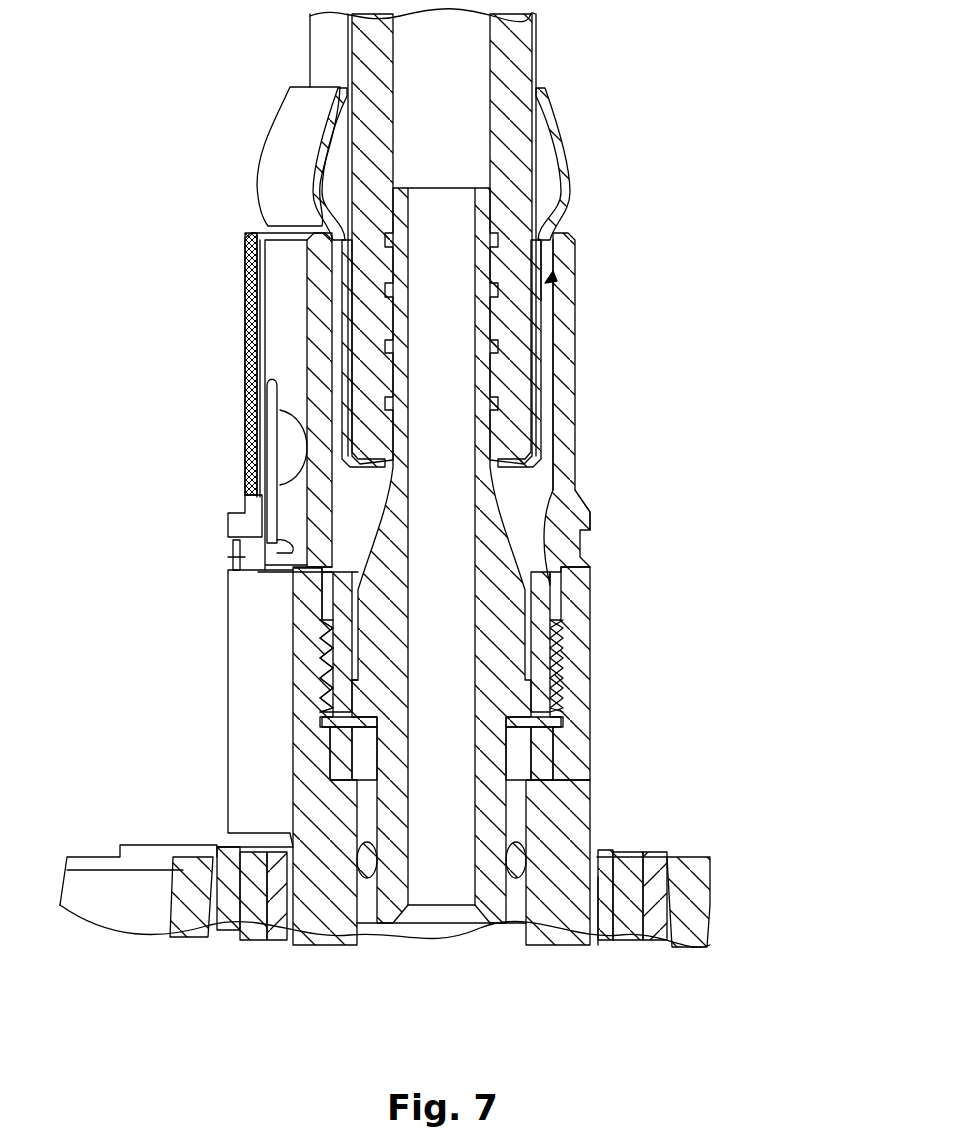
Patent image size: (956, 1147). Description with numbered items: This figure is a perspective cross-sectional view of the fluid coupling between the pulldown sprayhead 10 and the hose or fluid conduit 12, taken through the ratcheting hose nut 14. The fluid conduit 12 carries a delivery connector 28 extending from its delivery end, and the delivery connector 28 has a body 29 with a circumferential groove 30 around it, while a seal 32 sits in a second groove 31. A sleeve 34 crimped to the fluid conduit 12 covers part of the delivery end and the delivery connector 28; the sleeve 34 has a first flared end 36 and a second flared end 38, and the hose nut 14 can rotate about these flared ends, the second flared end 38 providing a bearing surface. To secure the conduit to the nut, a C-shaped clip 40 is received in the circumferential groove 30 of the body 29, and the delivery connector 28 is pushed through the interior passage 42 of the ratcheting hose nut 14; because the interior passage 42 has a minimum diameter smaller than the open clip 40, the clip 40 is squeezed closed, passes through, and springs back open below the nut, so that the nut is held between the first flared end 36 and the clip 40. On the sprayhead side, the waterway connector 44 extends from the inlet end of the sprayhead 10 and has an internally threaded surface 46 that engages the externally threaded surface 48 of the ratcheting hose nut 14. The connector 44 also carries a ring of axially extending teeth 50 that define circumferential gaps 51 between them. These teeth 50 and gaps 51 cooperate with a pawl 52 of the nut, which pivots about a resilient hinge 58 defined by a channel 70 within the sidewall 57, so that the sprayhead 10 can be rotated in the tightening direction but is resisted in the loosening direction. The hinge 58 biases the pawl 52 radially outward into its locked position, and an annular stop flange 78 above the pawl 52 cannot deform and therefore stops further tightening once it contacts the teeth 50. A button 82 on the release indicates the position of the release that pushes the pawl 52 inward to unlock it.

The sprayhead 10 is at (710, 907).
The fluid conduit 12 is at (533, 38).
The ratcheting hose nut 14 is at (573, 318).
The delivery connector 28 is at (573, 490).
The body 29 is at (573, 800).
The circumferential groove 30 is at (560, 747).
The second groove 31 is at (518, 893).
The seal 32 is at (507, 820).
The sleeve 34 is at (283, 116).
The first flared end 36 is at (570, 193).
The second flared end 38 is at (545, 423).
The C-shaped clip 40 is at (323, 750).
The interior passage 42 is at (560, 267).
The connector 44 is at (237, 747).
The internally threaded surface 46 is at (317, 710).
The externally threaded surface 48 is at (322, 680).
The teeth 50 is at (248, 553).
The circumferential gaps 51 is at (587, 553).
The pawl 52 is at (300, 558).
The sidewall 57 is at (565, 373).
The hinge 58 is at (292, 390).
The channel 70 is at (270, 382).
The annular stop flange 78 is at (592, 528).
The button 82 is at (270, 452).